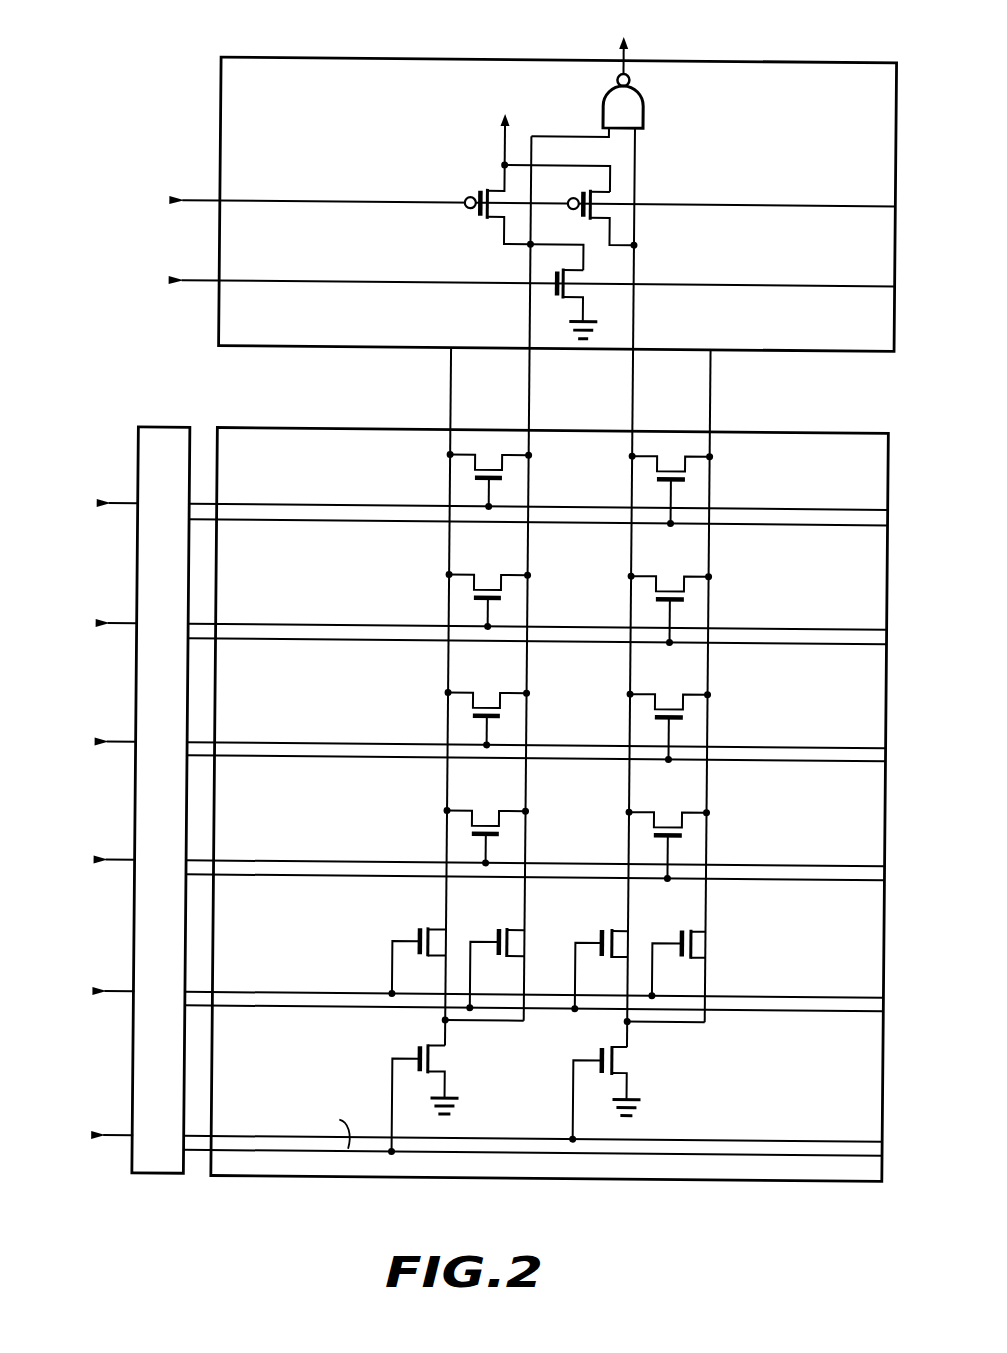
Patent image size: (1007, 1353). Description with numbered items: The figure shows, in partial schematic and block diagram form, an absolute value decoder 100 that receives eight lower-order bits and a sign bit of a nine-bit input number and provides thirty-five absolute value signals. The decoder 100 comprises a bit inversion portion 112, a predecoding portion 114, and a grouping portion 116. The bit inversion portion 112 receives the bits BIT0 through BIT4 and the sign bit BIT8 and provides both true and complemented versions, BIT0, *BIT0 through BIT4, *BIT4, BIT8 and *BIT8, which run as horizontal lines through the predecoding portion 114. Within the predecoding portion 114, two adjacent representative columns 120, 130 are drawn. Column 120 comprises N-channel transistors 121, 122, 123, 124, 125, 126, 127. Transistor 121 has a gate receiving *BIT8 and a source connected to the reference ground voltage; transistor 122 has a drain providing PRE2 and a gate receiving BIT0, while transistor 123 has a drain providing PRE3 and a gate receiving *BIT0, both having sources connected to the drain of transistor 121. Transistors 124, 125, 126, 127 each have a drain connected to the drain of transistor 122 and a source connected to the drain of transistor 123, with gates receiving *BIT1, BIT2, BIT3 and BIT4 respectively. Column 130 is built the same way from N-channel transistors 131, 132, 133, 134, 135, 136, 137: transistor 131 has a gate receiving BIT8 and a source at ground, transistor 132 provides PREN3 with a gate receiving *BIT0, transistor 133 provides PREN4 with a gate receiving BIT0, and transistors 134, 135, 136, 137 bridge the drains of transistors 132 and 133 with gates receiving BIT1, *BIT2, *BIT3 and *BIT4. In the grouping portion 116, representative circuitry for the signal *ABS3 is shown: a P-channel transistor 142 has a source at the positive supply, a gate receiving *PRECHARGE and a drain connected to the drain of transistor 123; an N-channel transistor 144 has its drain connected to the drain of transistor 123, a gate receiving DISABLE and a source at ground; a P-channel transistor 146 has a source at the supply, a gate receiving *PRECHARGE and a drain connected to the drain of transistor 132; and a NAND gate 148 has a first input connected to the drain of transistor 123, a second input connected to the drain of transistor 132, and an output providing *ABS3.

The absolute value decoder 100 is at (110, 92).
The bit inversion portion 112 is at (177, 425).
The predecoding portion 114 is at (280, 425).
The grouping portion 116 is at (162, 126).
The column 120 is at (416, 1206).
The N-channel transistor 121 is at (425, 1046).
The N-channel transistor 122 is at (423, 927).
The N-channel transistor 123 is at (506, 927).
The N-channel transistor 124 is at (500, 838).
The N-channel transistor 125 is at (500, 720).
The N-channel transistor 126 is at (500, 602).
The N-channel transistor 127 is at (500, 482).
The column 130 is at (598, 1206).
The N-channel transistor 131 is at (612, 1046).
The N-channel transistor 132 is at (611, 927).
The N-channel transistor 133 is at (690, 927).
The N-channel transistor 134 is at (683, 838).
The N-channel transistor 135 is at (683, 720).
The N-channel transistor 136 is at (683, 602).
The N-channel transistor 137 is at (683, 482).
The P-channel transistor 142 is at (490, 221).
The N-channel transistor 144 is at (560, 295).
The P-channel transistor 146 is at (593, 221).
The NAND gate 148 is at (639, 113).